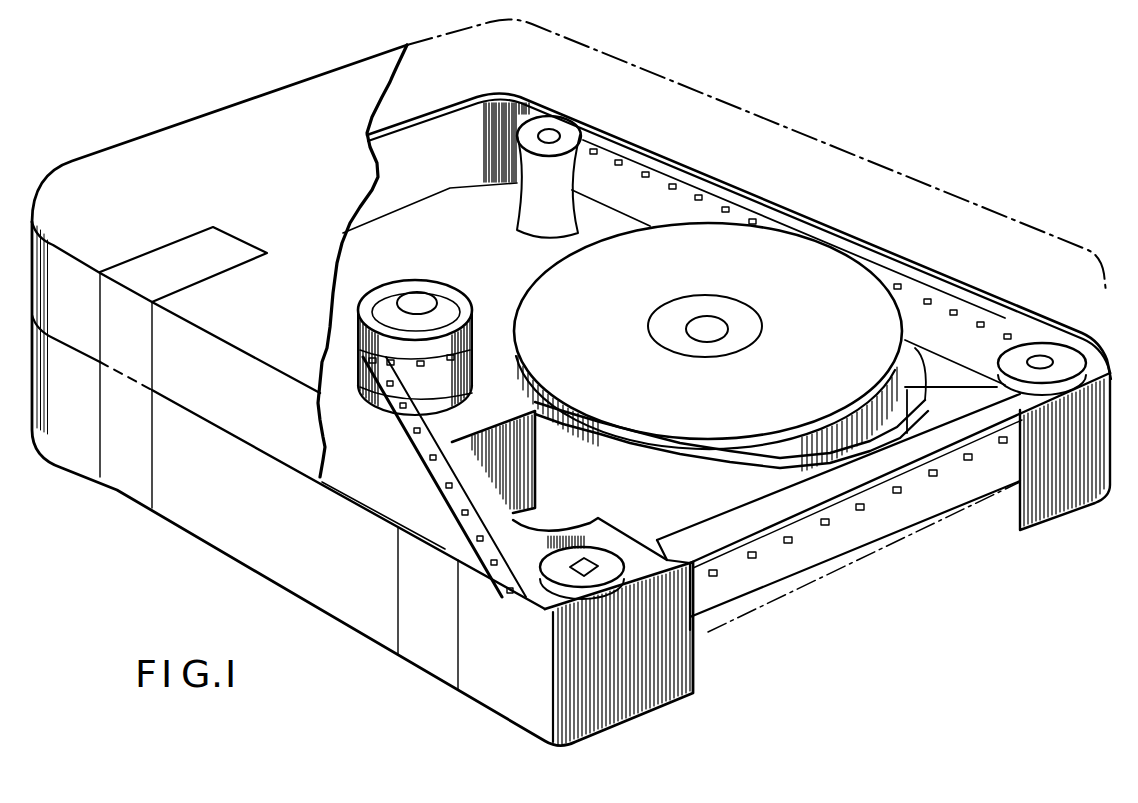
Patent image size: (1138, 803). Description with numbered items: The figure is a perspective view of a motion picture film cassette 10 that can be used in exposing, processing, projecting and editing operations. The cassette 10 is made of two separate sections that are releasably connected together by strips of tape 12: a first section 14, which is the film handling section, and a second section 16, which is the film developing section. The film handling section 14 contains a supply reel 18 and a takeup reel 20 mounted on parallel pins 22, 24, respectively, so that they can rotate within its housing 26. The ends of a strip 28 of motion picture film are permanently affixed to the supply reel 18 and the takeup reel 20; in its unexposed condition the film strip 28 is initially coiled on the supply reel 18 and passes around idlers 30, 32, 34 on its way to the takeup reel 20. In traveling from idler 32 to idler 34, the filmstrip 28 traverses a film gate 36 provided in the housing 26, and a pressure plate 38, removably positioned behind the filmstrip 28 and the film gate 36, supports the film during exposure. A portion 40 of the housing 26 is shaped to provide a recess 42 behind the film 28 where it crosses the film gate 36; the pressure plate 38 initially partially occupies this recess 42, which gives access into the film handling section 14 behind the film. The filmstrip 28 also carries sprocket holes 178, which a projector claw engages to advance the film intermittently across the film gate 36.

The motion picture film cassette 10 is at (139, 131).
The strips of tape 12 is at (183, 271).
The first section 14 is at (229, 556).
The second section 16 is at (247, 100).
The supply reel 18 is at (712, 307).
The takeup reel 20 is at (413, 288).
The pin 22 is at (693, 320).
The pin 24 is at (432, 301).
The housing 26 is at (905, 253).
The strip of motion picture film 28 is at (433, 393).
The idler 30 is at (552, 200).
The idler 32 is at (1062, 362).
The idler 34 is at (563, 582).
The film gate 36 is at (722, 648).
The pressure plate 38 is at (963, 423).
The portion of the housing 40 is at (482, 432).
The recess 42 is at (693, 508).
The sprocket holes 178 is at (907, 508).